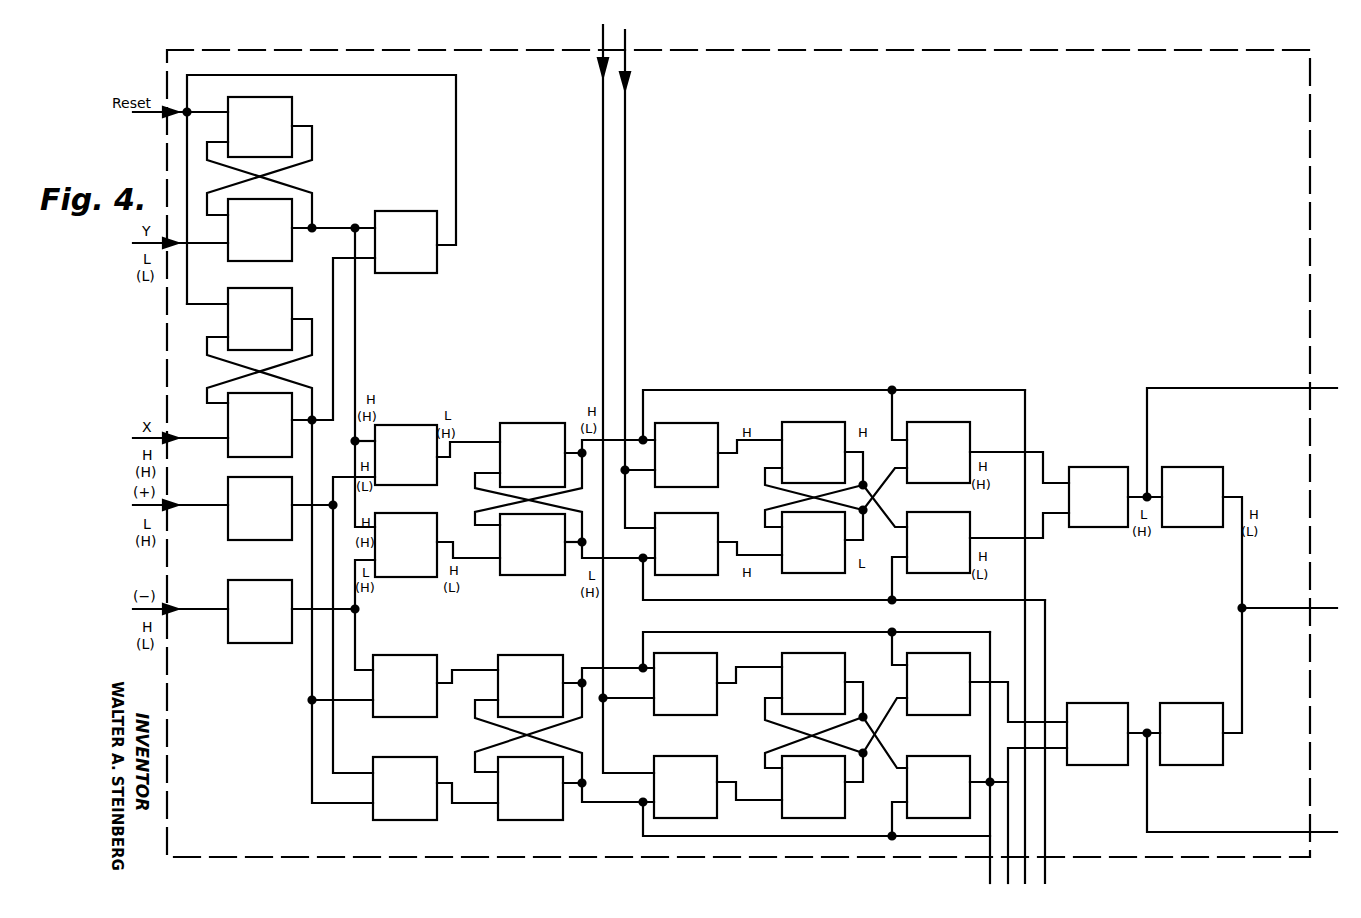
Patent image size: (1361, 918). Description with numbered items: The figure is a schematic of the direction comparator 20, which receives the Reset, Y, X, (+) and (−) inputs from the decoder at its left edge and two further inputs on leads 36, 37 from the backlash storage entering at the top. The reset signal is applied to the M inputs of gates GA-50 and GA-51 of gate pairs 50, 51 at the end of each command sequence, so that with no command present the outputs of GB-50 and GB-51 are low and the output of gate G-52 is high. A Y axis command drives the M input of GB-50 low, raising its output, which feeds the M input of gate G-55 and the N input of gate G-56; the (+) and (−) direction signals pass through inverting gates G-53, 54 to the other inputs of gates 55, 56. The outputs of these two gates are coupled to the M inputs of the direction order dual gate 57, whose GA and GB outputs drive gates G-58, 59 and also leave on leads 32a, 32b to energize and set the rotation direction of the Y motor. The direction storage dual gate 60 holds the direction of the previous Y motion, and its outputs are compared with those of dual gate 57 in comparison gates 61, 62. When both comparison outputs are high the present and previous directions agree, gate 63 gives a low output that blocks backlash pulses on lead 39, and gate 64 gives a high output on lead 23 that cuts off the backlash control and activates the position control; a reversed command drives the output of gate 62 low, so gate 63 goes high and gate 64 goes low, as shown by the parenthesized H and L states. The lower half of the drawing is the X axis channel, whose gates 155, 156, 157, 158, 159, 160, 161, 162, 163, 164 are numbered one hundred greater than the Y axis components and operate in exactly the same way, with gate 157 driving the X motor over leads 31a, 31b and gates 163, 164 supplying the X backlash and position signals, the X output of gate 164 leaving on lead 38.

The direction comparator 20 is at (738, 440).
The lead 36 is at (603, 40).
The lead 37 is at (626, 60).
The lead 39 is at (1283, 388).
The lead 23 is at (1302, 608).
The lead 38 is at (1258, 832).
The lead 31a is at (990, 856).
The lead 31b is at (1008, 838).
The lead 32a is at (1025, 843).
The lead 32b is at (1045, 853).
The gates GA-50 and GB- 50 is at (260, 179).
The gates GA-51 and GB- 51 is at (260, 372).
The gate G- 52 is at (406, 242).
The gate G- 53 is at (260, 508).
The gate G- 54 is at (260, 611).
The gate G- 55 is at (406, 455).
The gate G- 56 is at (406, 545).
The direction order dual gate 57 is at (532, 499).
The gate G- 58 is at (686, 455).
The gate G- 59 is at (686, 544).
The direction storage dual gate 60 is at (813, 497).
The comparison gate G- 61 is at (938, 452).
The comparison gate G- 62 is at (938, 542).
The gate G- 63 is at (1098, 497).
The gate G- 64 is at (1192, 497).
The gate G- 155 is at (405, 686).
The gate G- 156 is at (405, 788).
The direction order dual gate 157 is at (530, 737).
The gate G- 158 is at (685, 684).
The gate G- 159 is at (685, 787).
The direction storage dual gate 160 is at (813, 735).
The comparison gate G- 161 is at (938, 684).
The comparison gate G- 162 is at (938, 787).
The gate G- 163 is at (1097, 734).
The gate G- 164 is at (1191, 734).